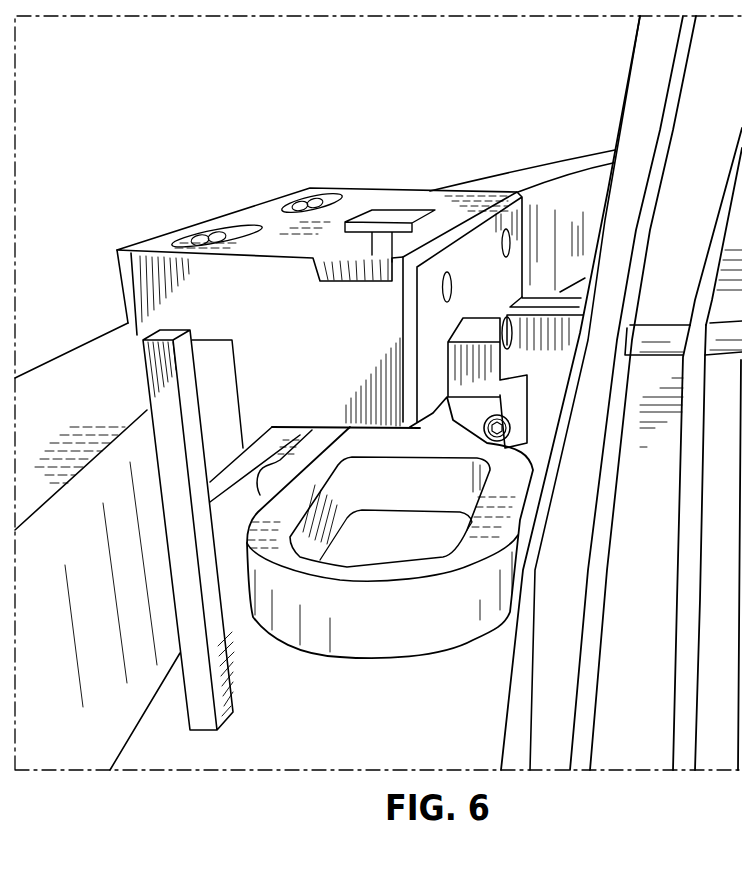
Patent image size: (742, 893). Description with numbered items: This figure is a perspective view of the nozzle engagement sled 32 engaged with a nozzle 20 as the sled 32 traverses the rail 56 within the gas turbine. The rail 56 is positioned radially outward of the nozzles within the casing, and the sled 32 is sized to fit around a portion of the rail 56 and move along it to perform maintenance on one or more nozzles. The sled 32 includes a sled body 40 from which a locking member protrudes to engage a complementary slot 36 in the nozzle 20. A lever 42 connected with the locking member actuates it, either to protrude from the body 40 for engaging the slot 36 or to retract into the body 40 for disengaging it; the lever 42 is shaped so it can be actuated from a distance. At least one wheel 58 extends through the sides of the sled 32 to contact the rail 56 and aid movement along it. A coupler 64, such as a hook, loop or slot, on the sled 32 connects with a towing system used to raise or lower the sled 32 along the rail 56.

The nozzle 20 is at (611, 346).
The nozzle engagement sled 32 is at (353, 379).
The slot 36 is at (557, 302).
The sled body 40 is at (449, 328).
The lever 42 is at (228, 544).
The rail 56 is at (110, 615).
The wheel 58 is at (308, 204).
The coupler 64 is at (398, 635).